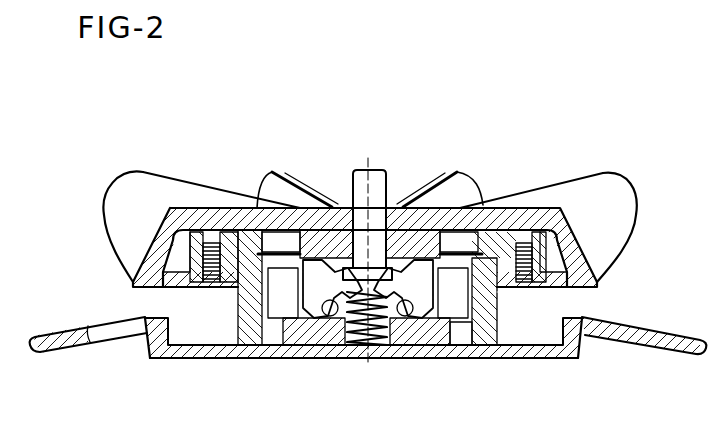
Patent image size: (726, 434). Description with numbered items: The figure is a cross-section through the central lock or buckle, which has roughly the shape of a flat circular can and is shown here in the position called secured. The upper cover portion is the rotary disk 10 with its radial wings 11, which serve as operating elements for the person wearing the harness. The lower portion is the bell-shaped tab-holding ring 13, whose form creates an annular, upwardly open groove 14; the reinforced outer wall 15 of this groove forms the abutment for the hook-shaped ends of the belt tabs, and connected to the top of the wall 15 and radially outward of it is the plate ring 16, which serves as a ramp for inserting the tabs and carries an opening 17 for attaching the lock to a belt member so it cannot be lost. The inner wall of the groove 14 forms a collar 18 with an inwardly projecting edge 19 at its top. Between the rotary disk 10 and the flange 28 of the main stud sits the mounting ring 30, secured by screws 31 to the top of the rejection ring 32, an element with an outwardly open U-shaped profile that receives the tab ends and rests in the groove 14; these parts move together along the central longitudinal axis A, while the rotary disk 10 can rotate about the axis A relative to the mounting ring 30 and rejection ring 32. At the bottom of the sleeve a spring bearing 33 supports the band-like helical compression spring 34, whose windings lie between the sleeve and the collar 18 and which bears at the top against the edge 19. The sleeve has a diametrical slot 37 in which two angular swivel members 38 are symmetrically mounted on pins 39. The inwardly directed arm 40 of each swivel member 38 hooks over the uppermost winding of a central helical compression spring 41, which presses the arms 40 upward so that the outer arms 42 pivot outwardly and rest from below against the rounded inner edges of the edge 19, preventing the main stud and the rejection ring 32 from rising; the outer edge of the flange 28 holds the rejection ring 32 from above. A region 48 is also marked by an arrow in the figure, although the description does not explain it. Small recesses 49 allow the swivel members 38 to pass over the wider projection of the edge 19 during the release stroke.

The rotary disk 10 is at (447, 218).
The radial wings 11 is at (138, 177).
The tab-holding ring 13 is at (241, 352).
The groove 14 is at (203, 327).
The outer wall 15 is at (162, 348).
The plate ring 16 is at (67, 343).
The opening 17 is at (120, 331).
The collar 18 is at (258, 340).
The edge 19 is at (275, 219).
The flange 28 is at (490, 257).
The mounting ring 30 is at (238, 238).
The screws 31 is at (207, 238).
The rejection ring 32 is at (168, 231).
The spring bearing 33 is at (296, 345).
The helical compression spring 34 is at (444, 350).
The slot 37 is at (406, 335).
The swivel members 38 is at (428, 292).
The pins 39 is at (326, 292).
The inwardly directed arm 40 is at (360, 268).
The helical compression spring 41 is at (362, 330).
The outer arms 42 is at (323, 207).
The gap 48 is at (582, 300).
The recesses 49 is at (250, 291).
The central longitudinal axis A is at (367, 362).